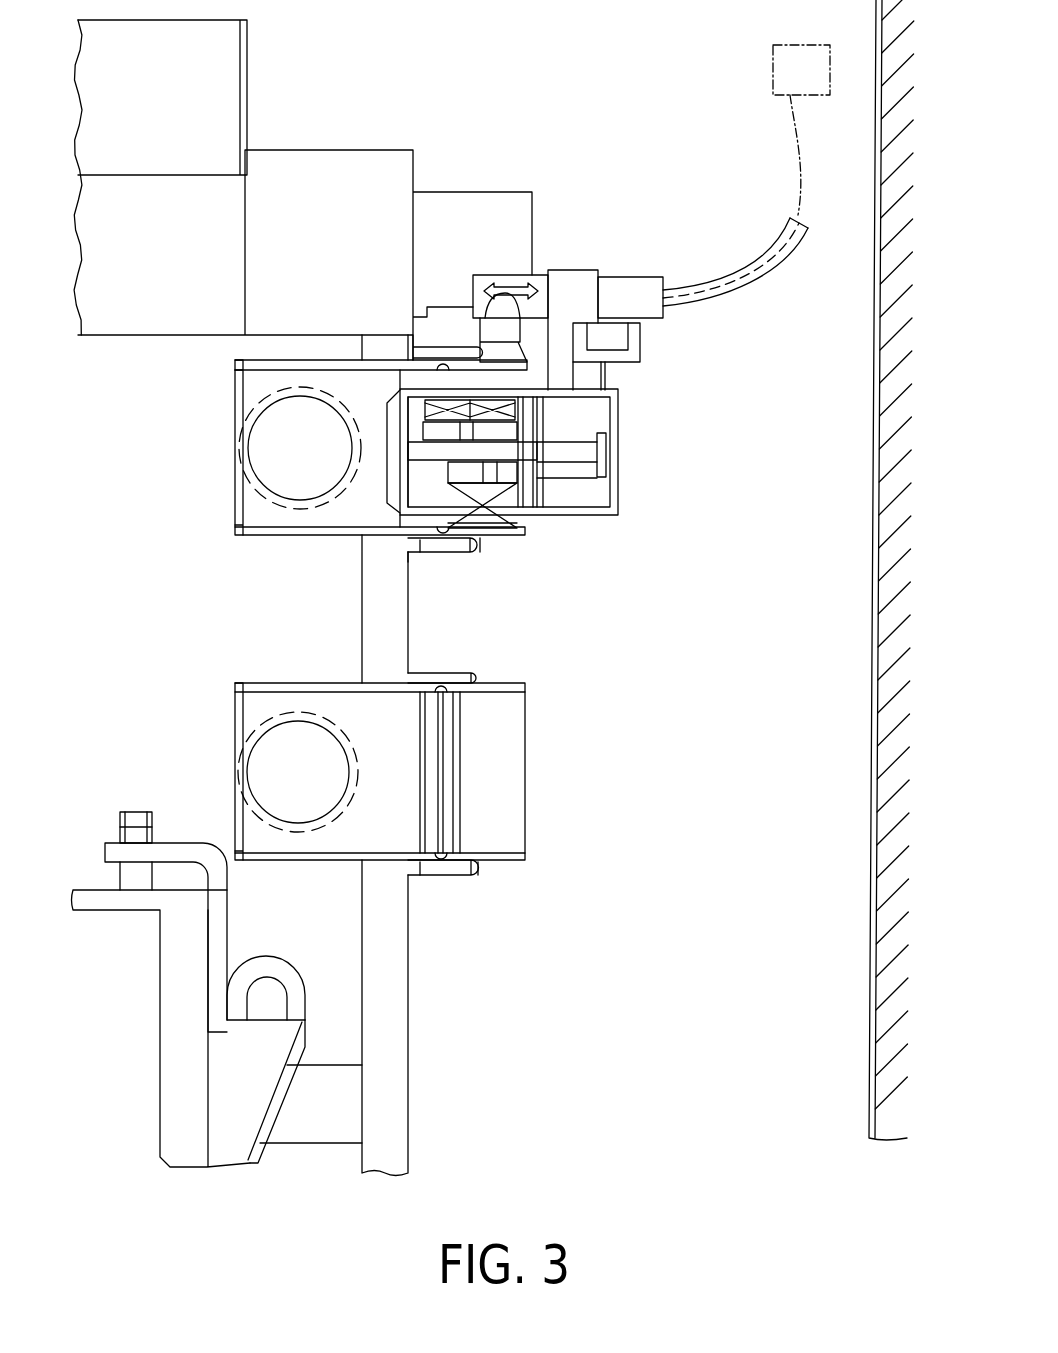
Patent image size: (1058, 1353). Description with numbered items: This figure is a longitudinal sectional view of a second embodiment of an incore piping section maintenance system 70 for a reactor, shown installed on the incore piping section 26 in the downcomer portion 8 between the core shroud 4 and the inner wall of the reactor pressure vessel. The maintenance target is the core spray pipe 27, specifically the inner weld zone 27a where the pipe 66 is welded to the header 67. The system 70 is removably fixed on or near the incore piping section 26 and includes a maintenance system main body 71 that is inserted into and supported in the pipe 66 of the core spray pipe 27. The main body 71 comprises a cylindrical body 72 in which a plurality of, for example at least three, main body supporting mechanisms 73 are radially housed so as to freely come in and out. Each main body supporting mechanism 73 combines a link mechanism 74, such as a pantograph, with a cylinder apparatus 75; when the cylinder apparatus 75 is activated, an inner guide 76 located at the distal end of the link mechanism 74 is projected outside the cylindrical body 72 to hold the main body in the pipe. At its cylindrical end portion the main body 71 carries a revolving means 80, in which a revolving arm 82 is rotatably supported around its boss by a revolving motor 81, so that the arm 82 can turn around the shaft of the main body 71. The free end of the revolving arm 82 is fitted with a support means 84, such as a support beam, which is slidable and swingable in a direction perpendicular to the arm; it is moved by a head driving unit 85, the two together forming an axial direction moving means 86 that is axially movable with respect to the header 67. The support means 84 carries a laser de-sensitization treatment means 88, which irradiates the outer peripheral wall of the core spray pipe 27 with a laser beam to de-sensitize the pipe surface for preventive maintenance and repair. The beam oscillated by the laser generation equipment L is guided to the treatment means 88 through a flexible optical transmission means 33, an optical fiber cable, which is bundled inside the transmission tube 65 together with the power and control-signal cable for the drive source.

The core shroud 4 is at (403, 1058).
The downcomer portion 8 is at (618, 1068).
The incore piping section 26 is at (531, 546).
The core spray pipe 27 is at (230, 474).
The inner weld zone 27a is at (440, 793).
The optical transmission means 33 is at (812, 212).
The transmission tube 65 is at (786, 268).
The pipe 66 is at (468, 542).
The header 67 is at (237, 500).
The incore piping section maintenance system 70 is at (683, 240).
The maintenance system main body 71 is at (383, 489).
The cylindrical body 72 is at (398, 513).
The main body supporting mechanism 73 is at (290, 288).
The link mechanism 74 is at (450, 403).
The cylinder apparatus 75 is at (417, 427).
The inner guide 76 is at (495, 530).
The revolving means 80 is at (509, 435).
The revolving motor 81 is at (590, 495).
The revolving arm 82 is at (588, 378).
The support means 84 is at (627, 277).
The head driving unit 85 is at (640, 345).
The axial direction moving means 86 is at (540, 272).
The laser de-sensitization treatment means 88 is at (492, 313).